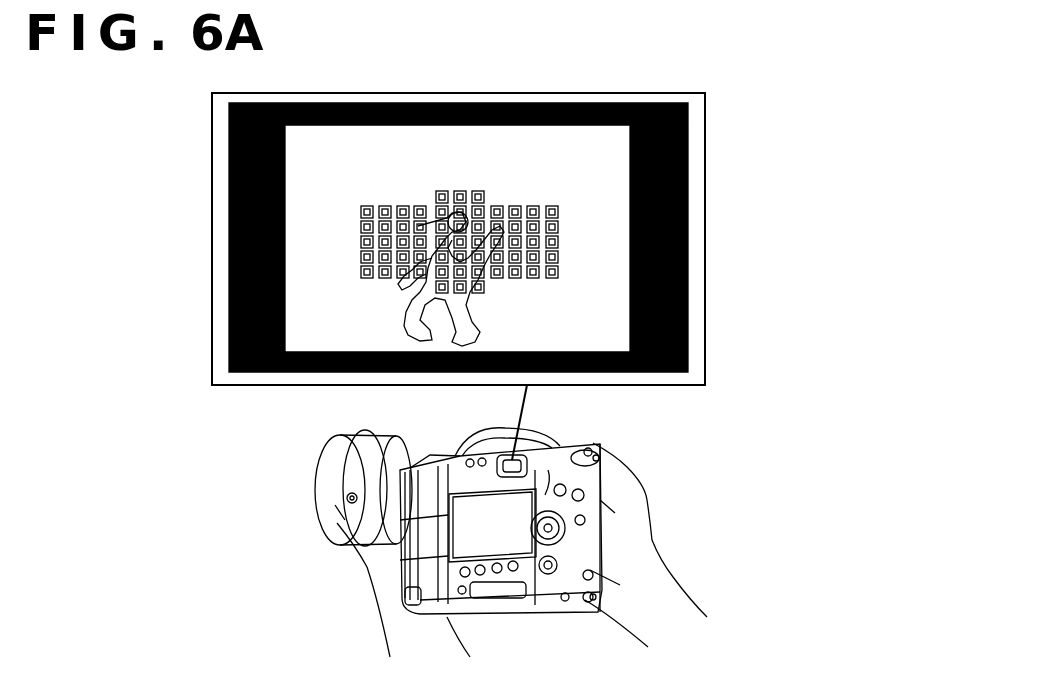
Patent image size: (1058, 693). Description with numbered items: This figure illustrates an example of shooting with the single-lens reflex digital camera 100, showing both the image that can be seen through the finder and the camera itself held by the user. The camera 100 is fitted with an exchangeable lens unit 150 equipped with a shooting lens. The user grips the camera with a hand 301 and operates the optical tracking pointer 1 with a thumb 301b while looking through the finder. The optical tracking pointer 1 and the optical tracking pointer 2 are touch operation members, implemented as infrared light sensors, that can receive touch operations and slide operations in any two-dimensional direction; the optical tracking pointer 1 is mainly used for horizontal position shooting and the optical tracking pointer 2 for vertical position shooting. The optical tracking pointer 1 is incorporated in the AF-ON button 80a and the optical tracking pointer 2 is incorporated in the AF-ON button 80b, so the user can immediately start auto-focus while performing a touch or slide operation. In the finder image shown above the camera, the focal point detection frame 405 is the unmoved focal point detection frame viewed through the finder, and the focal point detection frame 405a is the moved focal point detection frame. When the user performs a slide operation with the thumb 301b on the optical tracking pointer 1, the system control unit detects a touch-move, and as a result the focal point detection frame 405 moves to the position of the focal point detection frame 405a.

The focal point detection frame 405 is at (410, 258).
The focal point detection frame 405a is at (470, 240).
The camera 100 is at (457, 440).
The lens unit 150 is at (348, 443).
The hand 301 is at (643, 545).
The thumb 301b is at (548, 468).
The optical tracking pointer 1 is at (590, 452).
The AF-ON button 80a is at (598, 457).
The AF-ON button 80b is at (563, 603).
The optical tracking pointer 2 is at (593, 602).